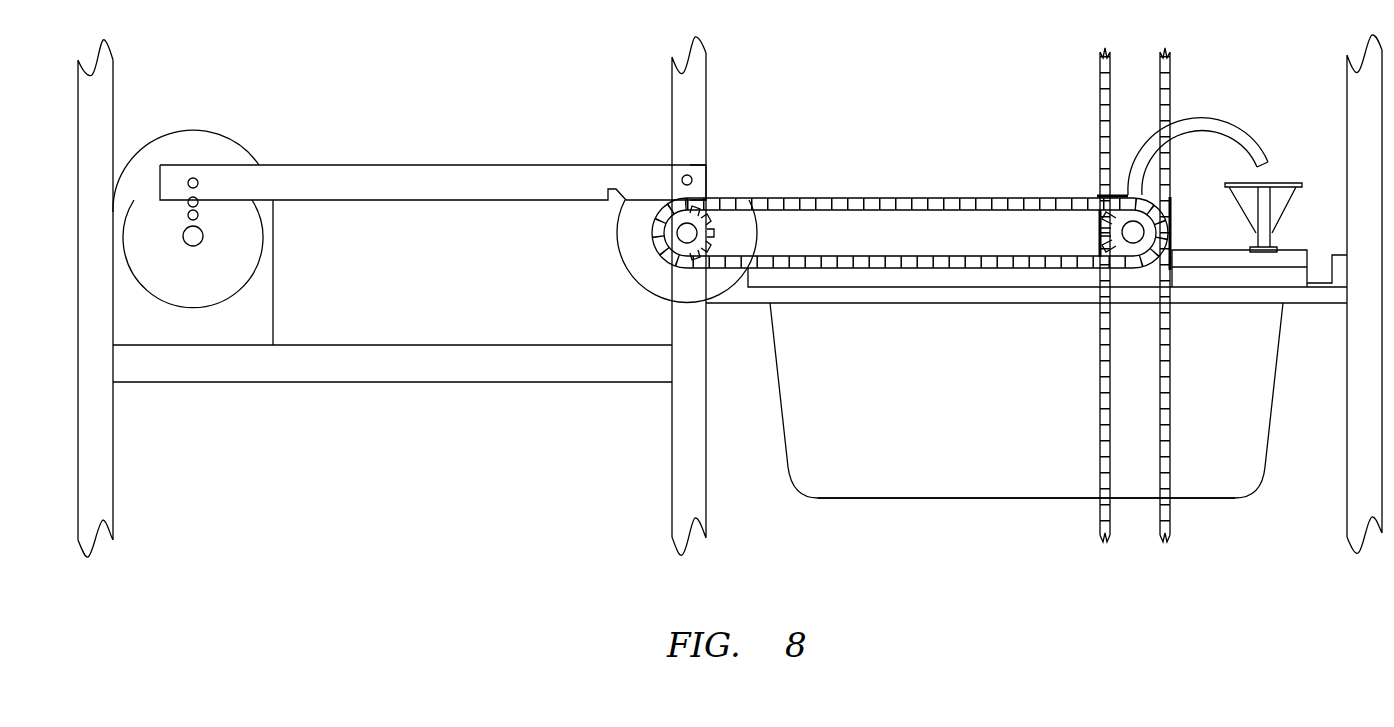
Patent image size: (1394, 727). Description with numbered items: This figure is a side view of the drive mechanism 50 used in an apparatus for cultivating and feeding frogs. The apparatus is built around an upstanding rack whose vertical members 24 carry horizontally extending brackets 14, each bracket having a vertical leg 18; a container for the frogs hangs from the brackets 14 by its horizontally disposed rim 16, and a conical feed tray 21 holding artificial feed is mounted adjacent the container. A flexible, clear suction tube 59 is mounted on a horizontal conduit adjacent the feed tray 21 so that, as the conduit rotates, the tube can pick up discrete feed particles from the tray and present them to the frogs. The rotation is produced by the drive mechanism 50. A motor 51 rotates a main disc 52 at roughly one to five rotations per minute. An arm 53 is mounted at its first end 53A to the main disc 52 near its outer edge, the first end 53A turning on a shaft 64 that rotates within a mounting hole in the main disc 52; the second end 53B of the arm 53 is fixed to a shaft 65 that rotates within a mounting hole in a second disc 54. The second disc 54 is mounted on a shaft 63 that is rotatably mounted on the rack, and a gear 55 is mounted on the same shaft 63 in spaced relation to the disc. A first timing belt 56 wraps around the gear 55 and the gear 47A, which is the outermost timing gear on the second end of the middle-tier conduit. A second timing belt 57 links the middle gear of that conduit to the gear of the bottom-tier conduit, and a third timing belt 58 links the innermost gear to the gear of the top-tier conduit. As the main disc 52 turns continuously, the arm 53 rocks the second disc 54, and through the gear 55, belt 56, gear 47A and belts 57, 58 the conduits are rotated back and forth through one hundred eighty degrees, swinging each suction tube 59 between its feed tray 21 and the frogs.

The bracket 14 is at (1322, 303).
The rim 16 is at (905, 279).
The vertical leg 18 is at (893, 498).
The feed tray 21 is at (1278, 183).
The vertical member 24 is at (1347, 488).
The gear 47A is at (1110, 215).
The drive mechanism 50 is at (533, 70).
The motor 51 is at (197, 130).
The main disc 52 is at (253, 275).
The arm 53 is at (472, 165).
The first end of arm 53A is at (197, 165).
The second end of arm 53B is at (690, 165).
The second disc 54 is at (640, 285).
The gear 55 is at (672, 236).
The first timing belt 56 is at (947, 198).
The second timing belt 57 is at (1100, 88).
The third timing belt 58 is at (1160, 517).
The suction tube 59 is at (1215, 118).
The shaft 63 is at (693, 225).
The shaft 64 is at (203, 235).
The shaft 65 is at (683, 175).